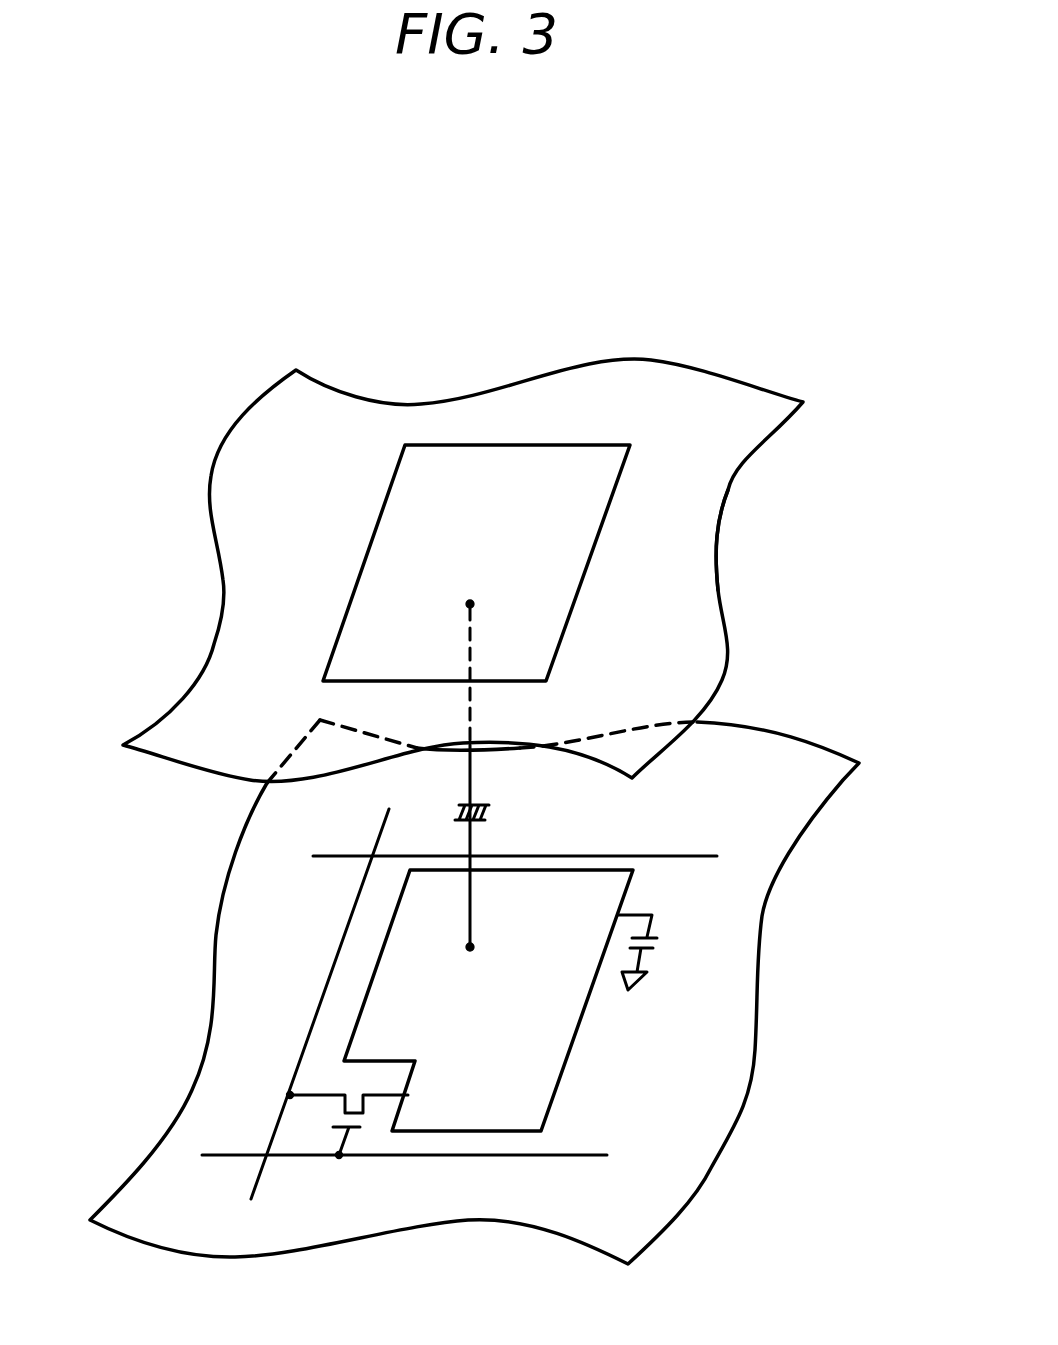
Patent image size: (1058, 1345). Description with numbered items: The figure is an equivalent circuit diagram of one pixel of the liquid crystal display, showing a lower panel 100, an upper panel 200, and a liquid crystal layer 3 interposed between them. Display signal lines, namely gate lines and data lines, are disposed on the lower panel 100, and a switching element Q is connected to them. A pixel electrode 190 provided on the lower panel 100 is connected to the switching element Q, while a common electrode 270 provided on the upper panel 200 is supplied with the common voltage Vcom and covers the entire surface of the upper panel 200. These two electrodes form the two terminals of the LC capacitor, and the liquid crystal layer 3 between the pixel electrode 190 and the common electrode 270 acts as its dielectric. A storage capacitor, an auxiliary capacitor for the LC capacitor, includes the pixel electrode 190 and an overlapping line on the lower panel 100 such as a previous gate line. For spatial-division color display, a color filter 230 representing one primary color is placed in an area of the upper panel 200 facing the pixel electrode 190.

The liquid crystal layer 3 is at (115, 870).
The lower panel 100 is at (772, 968).
The pixel electrode 190 is at (568, 1059).
The upper panel 200 is at (754, 604).
The color filter 230 is at (564, 636).
The common electrode 270 is at (723, 540).